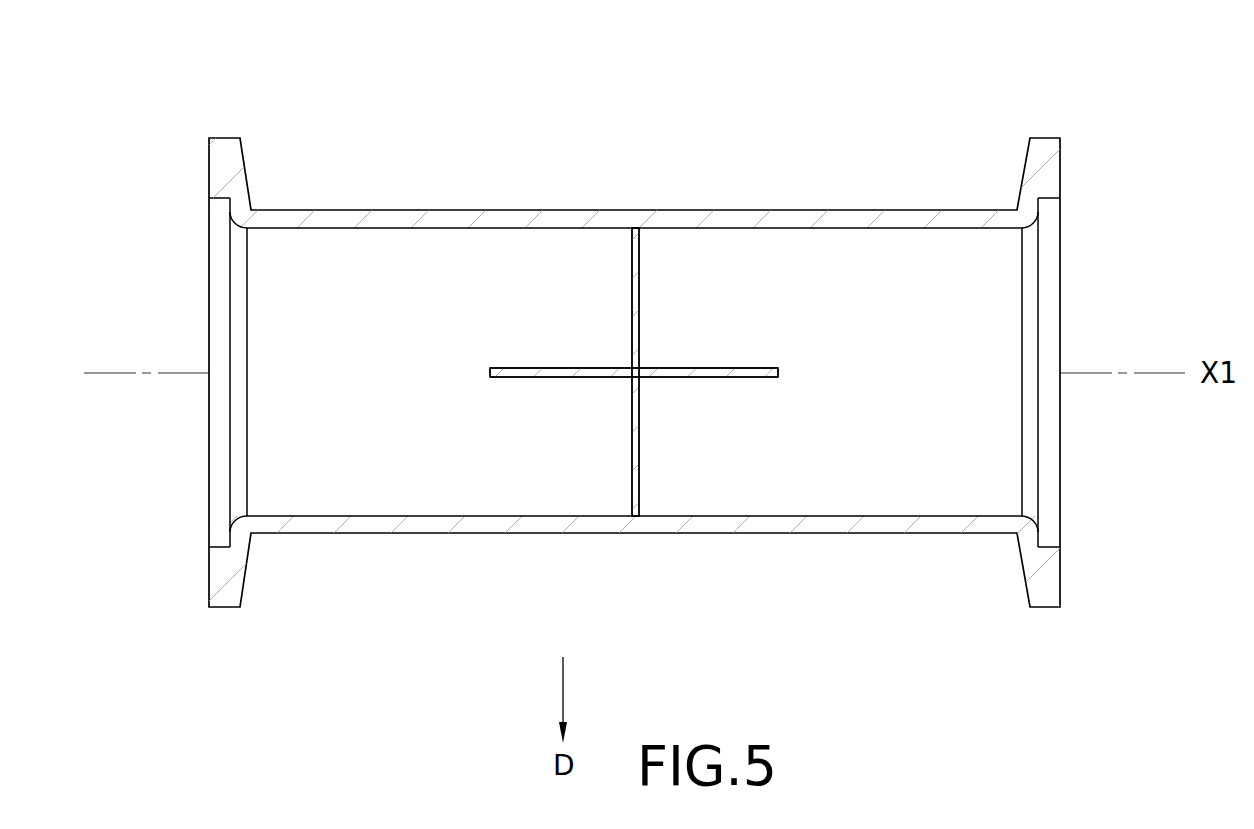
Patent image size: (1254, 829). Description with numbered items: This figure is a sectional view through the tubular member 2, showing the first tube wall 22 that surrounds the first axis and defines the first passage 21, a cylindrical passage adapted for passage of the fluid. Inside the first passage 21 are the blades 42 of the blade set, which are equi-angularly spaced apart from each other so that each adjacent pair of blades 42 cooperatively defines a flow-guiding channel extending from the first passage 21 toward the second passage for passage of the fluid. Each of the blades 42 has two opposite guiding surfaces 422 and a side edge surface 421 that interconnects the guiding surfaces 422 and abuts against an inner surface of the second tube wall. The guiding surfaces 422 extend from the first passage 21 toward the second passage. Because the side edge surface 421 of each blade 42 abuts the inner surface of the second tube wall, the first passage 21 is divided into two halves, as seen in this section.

The tubular member 2 is at (1055, 118).
The first passage 21 is at (325, 258).
The first tube wall 22 is at (917, 218).
The blade 42 is at (563, 372).
The side edge surface 421 is at (633, 230).
The guiding surface 422 is at (527, 368).